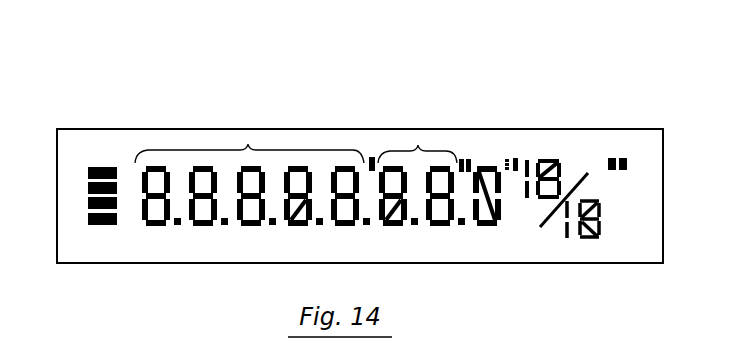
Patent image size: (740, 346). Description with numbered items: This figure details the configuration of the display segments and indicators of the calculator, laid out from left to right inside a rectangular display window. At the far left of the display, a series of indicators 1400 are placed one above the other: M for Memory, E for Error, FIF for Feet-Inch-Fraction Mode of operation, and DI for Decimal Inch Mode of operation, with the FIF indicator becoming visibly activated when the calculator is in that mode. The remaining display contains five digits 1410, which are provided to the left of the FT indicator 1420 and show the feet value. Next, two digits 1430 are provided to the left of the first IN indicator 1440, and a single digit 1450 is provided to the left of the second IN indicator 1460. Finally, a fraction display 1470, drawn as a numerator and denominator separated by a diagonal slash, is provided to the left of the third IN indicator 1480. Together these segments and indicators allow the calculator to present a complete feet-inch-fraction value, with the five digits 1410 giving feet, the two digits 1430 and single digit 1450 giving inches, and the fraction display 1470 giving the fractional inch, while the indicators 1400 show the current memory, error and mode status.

The indicators 1400 is at (105, 160).
The five digits 1410 is at (248, 146).
The FT indicator 1420 is at (372, 155).
The two digits 1430 is at (418, 146).
The first IN indicator 1440 is at (468, 156).
The one digit 1450 is at (489, 164).
The second IN indicator 1460 is at (512, 155).
The fraction display 1470 is at (576, 171).
The third IN indicator 1480 is at (627, 160).